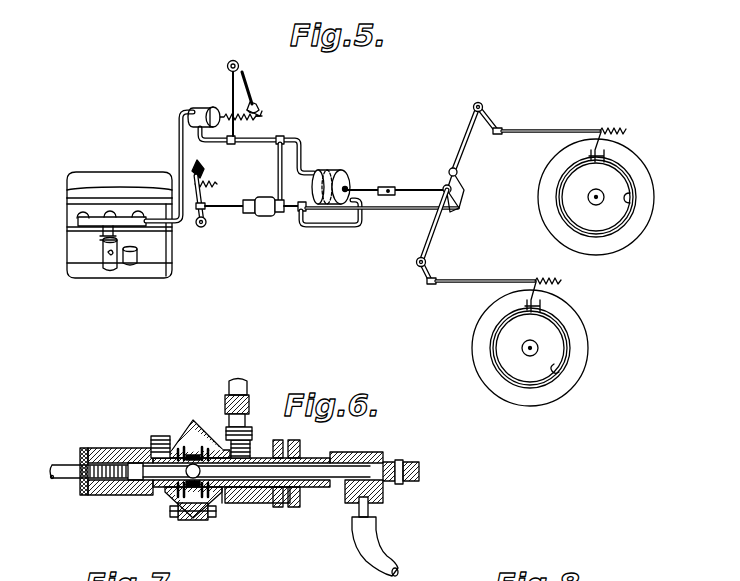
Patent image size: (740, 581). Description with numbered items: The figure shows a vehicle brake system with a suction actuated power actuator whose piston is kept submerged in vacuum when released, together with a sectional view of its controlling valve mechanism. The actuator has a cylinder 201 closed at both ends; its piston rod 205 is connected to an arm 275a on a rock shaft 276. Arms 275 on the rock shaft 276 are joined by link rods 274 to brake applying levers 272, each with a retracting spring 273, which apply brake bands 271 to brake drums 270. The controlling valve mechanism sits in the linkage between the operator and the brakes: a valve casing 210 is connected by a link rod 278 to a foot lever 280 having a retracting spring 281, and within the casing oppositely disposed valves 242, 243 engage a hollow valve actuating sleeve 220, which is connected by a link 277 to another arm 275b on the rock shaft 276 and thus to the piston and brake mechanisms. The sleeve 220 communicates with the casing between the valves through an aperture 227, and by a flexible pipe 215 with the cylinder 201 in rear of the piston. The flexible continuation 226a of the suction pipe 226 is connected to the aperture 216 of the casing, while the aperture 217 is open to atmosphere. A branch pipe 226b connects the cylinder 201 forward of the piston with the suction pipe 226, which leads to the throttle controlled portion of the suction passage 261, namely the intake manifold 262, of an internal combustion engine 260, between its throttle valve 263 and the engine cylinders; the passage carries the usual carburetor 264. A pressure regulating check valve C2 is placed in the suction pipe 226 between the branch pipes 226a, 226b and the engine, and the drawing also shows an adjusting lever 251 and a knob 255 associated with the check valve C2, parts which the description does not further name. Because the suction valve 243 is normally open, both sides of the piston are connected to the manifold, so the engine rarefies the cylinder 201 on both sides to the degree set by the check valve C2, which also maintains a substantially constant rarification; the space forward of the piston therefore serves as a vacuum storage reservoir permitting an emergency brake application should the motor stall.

In FIG. 5, the cylinder 201 is at (350, 176).
In FIG. 5, the piston rod 205 is at (369, 192).
In FIG. 5, the valve casing 210 is at (266, 217).
In FIG. 6, the valve casing 210 is at (258, 497).
In FIG. 5, the flexible pipe 215 is at (326, 226).
In FIG. 6, the flexible pipe 215 is at (364, 560).
In FIG. 6, the aperture 216 is at (242, 447).
In FIG. 6, the aperture 217 is at (163, 436).
In FIG. 6, the hollow valve actuating sleeve 220 is at (323, 461).
In FIG. 5, the suction pipe 226 is at (180, 141).
In FIG. 5, the flexible continuation of the suction pipe 226a is at (278, 196).
In FIG. 6, the flexible continuation of the suction pipe 226a is at (241, 385).
In FIG. 5, the branch pipe 226b is at (299, 150).
In FIG. 6, the aperture 227 is at (140, 491).
In FIG. 6, the valve 242 is at (178, 502).
In FIG. 6, the suction valve 243 is at (212, 506).
In FIG. 5, the lever 251 is at (252, 93).
In FIG. 5, the control knob / rod 255 is at (229, 61).
In FIG. 5, the internal combustion engine 260 is at (103, 180).
In FIG. 5, the suction passage 261 is at (101, 237).
In FIG. 5, the intake manifold 262 is at (80, 221).
In FIG. 5, the throttle valve 263 is at (107, 271).
In FIG. 5, the carburetor 264 is at (132, 266).
In FIG. 5, the brake drum 270 is at (627, 204).
In FIG. 5, the brake band 271 is at (634, 200).
In FIG. 5, the brake applying lever 272 is at (603, 146).
In FIG. 5, the retracting spring 273 is at (620, 119).
In FIG. 5, the link rod 274 is at (566, 126).
In FIG. 5, the arms 275 is at (492, 118).
In FIG. 5, the arm 275a is at (461, 188).
In FIG. 5, the arm 275b is at (456, 210).
In FIG. 5, the rock shaft 276 is at (457, 163).
In FIG. 5, the link 277 is at (387, 213).
In FIG. 5, the link rod 278 is at (220, 218).
In FIG. 6, the link rod 278 is at (66, 483).
In FIG. 5, the foot lever 280 is at (196, 229).
In FIG. 5, the retracting spring 281 is at (215, 173).
In FIG. 5, the pressure regulating check valve C2 is at (207, 108).